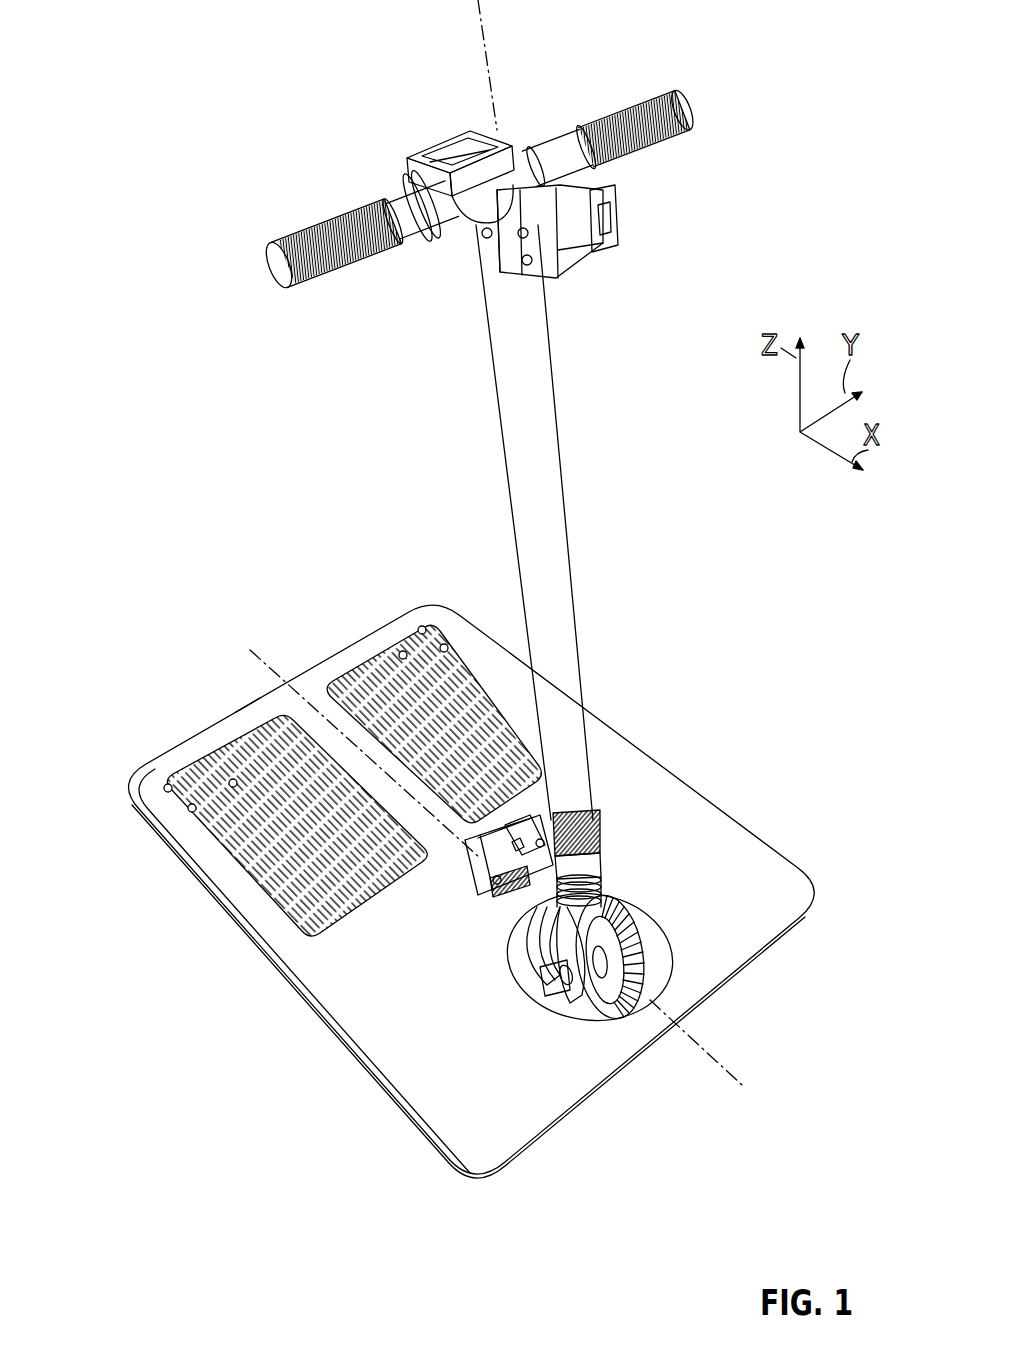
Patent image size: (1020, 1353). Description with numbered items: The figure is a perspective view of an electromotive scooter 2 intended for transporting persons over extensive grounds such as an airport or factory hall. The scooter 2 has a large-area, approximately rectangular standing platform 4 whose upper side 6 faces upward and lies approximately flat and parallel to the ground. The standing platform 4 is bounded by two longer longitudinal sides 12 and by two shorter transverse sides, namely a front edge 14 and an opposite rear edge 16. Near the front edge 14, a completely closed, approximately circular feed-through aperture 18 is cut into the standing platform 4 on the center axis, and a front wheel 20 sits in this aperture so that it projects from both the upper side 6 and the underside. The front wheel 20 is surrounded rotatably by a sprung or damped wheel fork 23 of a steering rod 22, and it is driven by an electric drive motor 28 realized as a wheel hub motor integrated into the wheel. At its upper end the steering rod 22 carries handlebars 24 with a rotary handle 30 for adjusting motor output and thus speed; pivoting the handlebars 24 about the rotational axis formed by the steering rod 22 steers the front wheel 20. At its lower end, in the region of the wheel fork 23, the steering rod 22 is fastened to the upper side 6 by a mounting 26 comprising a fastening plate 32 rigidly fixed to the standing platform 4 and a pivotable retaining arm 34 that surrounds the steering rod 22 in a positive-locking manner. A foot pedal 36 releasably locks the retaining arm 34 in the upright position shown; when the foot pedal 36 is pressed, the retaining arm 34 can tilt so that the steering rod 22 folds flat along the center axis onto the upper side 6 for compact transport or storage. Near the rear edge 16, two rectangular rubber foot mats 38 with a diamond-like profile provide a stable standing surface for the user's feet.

The electromotive scooter 2 is at (792, 182).
The standing platform 4 is at (612, 746).
The upper side 6 is at (700, 834).
The longitudinal sides 12 is at (655, 760).
The front-side transverse side 14 is at (618, 1070).
The rear-side transverse side 16 is at (245, 706).
The feed-through aperture 18 is at (548, 992).
The front wheel 20 is at (627, 1023).
The steering rod 22 is at (543, 473).
The wheel fork 23 is at (548, 980).
The handlebars 24 is at (543, 150).
The mounting 26 is at (515, 905).
The electric drive motor 28 is at (569, 985).
The rotary handle 30 is at (461, 145).
The fastening plate 32 is at (478, 877).
The retaining arm 34 is at (600, 862).
The foot pedal 36 is at (478, 856).
The foot mats 38 is at (416, 622).